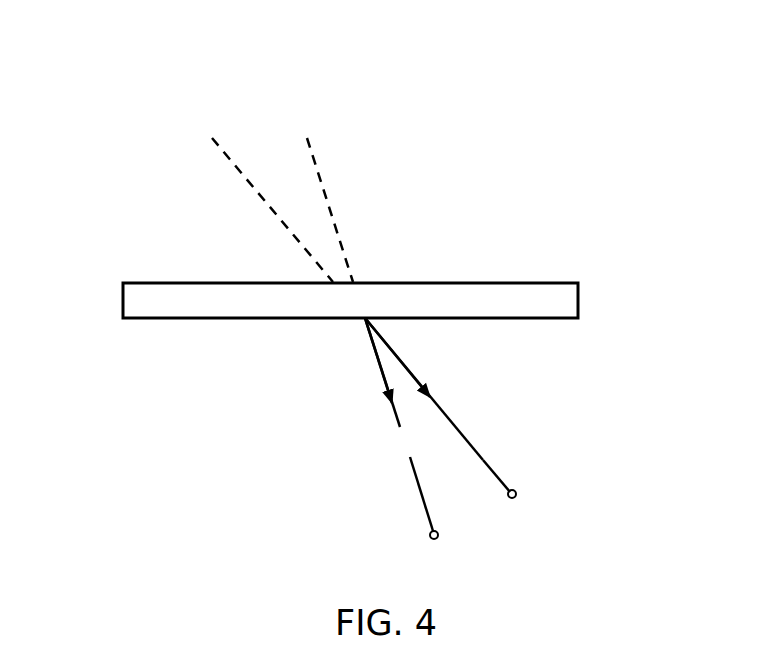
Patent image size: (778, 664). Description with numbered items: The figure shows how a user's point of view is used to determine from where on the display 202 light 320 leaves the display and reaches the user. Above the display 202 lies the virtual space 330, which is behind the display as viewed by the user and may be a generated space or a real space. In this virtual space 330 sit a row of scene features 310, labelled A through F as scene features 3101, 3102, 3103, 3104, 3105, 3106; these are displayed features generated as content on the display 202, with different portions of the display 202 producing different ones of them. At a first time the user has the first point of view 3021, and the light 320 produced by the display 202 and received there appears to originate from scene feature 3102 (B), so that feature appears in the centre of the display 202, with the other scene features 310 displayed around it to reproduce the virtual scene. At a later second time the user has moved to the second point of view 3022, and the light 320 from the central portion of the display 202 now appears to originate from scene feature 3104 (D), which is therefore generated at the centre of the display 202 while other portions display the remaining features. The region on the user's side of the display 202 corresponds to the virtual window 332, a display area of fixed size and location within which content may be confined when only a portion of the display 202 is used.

The display 202 is at (580, 303).
The scene feature 310 is at (241, 141).
The scene feature A 3101 is at (161, 98).
The scene feature B 3102 is at (203, 97).
The scene feature C 3103 is at (253, 98).
The scene feature D 3104 is at (302, 97).
The scene feature E 3105 is at (357, 98).
The scene feature F 3106 is at (423, 88).
The light 320 is at (444, 412).
The first point of view 3021 is at (517, 491).
The second point of view 3022 is at (438, 535).
The virtual space 330 is at (713, 167).
The virtual window 332 is at (713, 397).